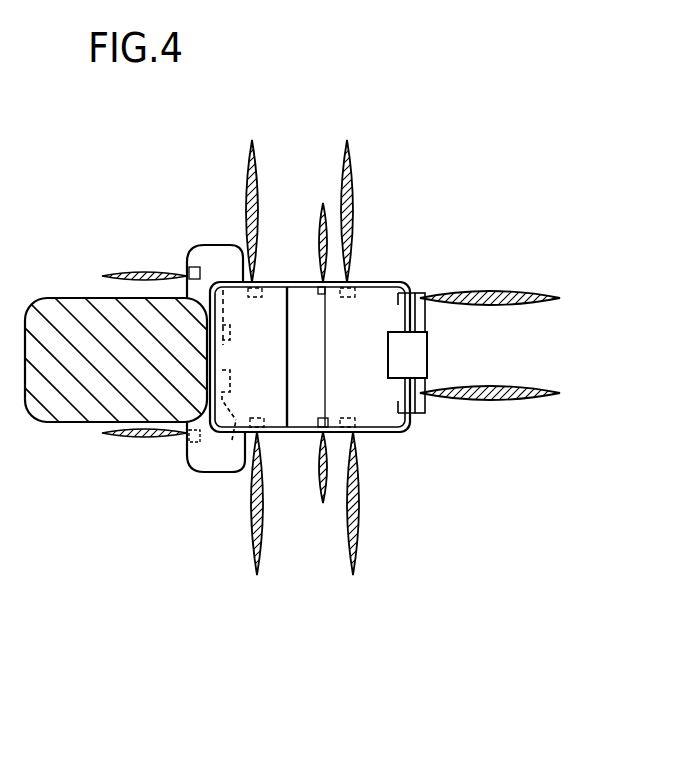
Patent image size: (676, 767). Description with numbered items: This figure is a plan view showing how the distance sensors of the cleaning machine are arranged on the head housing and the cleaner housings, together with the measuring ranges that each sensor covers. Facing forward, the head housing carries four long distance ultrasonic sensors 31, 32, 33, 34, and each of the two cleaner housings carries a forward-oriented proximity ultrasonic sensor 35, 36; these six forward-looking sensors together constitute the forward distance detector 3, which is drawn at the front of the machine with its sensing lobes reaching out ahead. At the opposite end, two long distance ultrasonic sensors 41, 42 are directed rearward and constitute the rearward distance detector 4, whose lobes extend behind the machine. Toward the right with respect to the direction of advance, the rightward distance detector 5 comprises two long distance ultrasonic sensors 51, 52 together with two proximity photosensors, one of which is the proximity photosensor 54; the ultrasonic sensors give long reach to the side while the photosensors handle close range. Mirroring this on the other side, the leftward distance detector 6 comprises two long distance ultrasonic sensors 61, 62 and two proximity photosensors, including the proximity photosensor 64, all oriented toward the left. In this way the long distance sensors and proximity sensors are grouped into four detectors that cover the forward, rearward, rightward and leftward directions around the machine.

The forward distance detector 3 is at (110, 255).
The long distance ultrasonic sensor 31 is at (223, 290).
The long distance ultrasonic sensor 32 is at (232, 440).
The long distance ultrasonic sensor 33 is at (228, 340).
The long distance ultrasonic sensor 34 is at (228, 378).
The proximity ultrasonic sensor 35 is at (190, 262).
The proximity ultrasonic sensor 36 is at (190, 465).
The rearward distance detector 4 is at (495, 405).
The long distance ultrasonic sensor 41 is at (412, 428).
The long distance ultrasonic sensor 42 is at (412, 287).
The rightward distance detector 5 is at (400, 190).
The long distance ultrasonic sensor 51 is at (262, 290).
The long distance ultrasonic sensor 52 is at (370, 291).
The proximity photosensor 54 is at (326, 293).
The leftward distance detector 6 is at (352, 588).
The long distance ultrasonic sensor 61 is at (262, 437).
The long distance ultrasonic sensor 62 is at (368, 432).
The proximity photosensor 64 is at (327, 422).